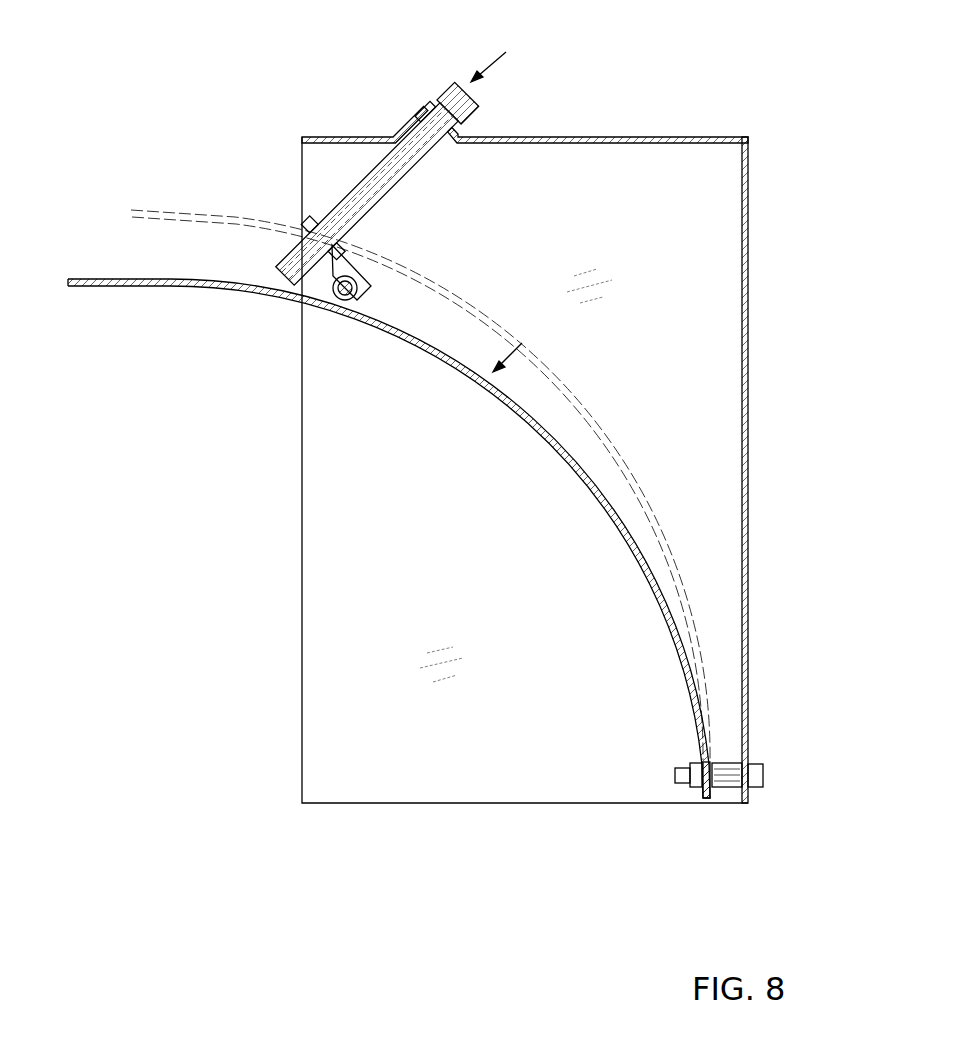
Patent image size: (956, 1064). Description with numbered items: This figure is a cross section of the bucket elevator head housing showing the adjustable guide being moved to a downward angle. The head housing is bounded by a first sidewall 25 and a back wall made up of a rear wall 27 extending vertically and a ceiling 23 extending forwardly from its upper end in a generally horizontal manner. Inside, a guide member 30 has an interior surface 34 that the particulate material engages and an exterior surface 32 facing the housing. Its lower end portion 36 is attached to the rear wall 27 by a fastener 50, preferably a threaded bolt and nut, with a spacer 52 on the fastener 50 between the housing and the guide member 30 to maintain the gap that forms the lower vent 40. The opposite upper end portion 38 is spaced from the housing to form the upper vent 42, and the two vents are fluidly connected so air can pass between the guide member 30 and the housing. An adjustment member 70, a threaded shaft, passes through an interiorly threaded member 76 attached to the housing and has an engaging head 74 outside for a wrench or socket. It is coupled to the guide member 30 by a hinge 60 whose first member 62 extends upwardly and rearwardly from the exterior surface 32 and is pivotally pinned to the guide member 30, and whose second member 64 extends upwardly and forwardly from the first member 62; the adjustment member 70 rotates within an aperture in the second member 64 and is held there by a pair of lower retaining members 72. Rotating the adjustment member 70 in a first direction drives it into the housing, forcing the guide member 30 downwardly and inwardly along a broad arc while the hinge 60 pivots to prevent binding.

The ceiling 23 is at (620, 137).
The first sidewall 25 is at (385, 512).
The rear wall 27 is at (750, 288).
The guide member 30 is at (255, 296).
The exterior surface 32 is at (98, 279).
The interior surface 34 is at (130, 288).
The lower end portion 36 is at (696, 790).
The upper end portion 38 is at (68, 284).
The lower vent 40 is at (720, 799).
The upper vent 42 is at (325, 167).
The fastener 50 is at (676, 776).
The spacer 52 is at (726, 762).
The hinge 60 is at (340, 300).
The first member 62 is at (372, 280).
The second member 64 is at (348, 248).
The adjustment member 70 is at (372, 168).
The lower retaining members 72 is at (303, 218).
The engaging head 74 is at (442, 90).
The interiorly threaded member 76 is at (430, 99).